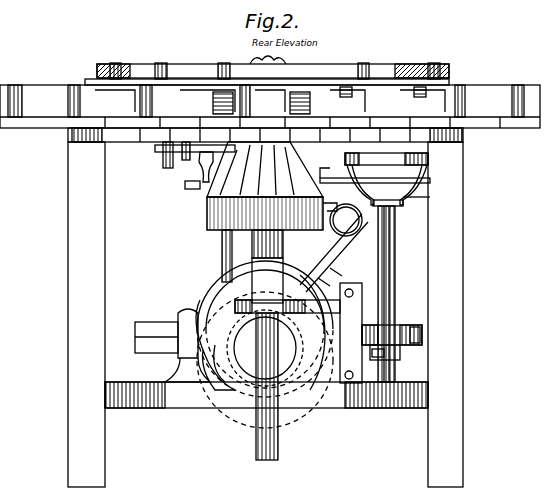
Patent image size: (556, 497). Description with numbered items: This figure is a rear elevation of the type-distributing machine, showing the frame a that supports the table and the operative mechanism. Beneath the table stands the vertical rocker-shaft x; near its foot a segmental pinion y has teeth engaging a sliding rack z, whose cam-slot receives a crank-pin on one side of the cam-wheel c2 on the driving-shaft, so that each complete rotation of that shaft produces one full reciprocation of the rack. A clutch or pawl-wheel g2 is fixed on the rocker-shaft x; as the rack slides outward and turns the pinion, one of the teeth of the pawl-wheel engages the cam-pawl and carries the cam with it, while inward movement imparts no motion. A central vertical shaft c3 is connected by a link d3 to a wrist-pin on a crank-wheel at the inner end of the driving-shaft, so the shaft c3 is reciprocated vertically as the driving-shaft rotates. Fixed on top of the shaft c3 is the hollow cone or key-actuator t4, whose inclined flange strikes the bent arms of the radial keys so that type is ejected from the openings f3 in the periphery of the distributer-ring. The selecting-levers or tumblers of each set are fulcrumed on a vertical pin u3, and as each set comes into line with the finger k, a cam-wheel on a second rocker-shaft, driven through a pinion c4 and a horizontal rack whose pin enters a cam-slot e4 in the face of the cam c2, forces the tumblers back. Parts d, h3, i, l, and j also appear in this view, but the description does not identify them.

The frame a is at (265, 307).
The bed plate d is at (270, 106).
The mouths or openings f3 is at (449, 73).
The vertical pin u3 is at (274, 65).
The hollow cone or key-actuator t4 is at (265, 186).
The central vertical shaft c3 is at (287, 345).
The guide column h3 is at (233, 256).
The cam-wheel c2 is at (279, 329).
The pinion c4 is at (265, 359).
The link d3 is at (176, 345).
The cam-slot e4 is at (226, 363).
The clutch or pawl-wheel g2 is at (375, 179).
The vertical rocker-shaft x is at (386, 294).
The roller i is at (342, 219).
The finger k is at (334, 253).
The plate l is at (325, 178).
The segmental pinion y is at (392, 342).
The pin j is at (383, 354).
The sliding rack z is at (415, 335).